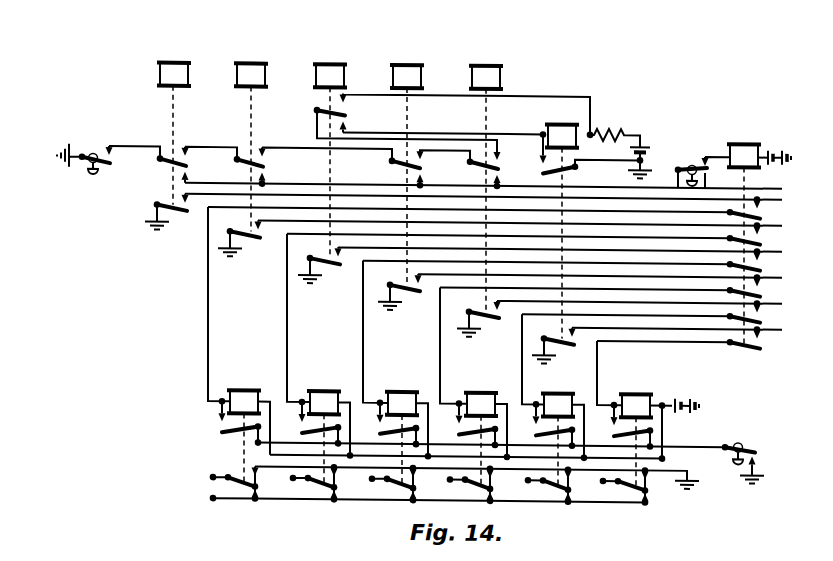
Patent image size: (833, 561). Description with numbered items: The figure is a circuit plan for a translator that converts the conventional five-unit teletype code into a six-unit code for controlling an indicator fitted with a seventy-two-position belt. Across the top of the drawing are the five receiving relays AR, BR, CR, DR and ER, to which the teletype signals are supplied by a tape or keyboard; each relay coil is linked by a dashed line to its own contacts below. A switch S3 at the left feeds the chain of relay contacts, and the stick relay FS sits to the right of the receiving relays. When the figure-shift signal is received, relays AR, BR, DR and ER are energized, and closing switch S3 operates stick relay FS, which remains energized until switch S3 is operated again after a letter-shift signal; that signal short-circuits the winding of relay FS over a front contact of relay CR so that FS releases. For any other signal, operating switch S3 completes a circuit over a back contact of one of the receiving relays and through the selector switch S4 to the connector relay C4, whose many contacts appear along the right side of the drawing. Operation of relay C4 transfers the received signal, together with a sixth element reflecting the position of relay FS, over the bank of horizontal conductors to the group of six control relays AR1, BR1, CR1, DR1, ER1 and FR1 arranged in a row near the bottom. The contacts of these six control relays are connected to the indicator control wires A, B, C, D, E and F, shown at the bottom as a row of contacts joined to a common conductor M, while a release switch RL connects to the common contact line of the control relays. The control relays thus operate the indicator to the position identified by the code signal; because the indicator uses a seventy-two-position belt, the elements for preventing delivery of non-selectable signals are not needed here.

The receiving relay AR is at (174, 122).
The receiving relay BR is at (251, 135).
The receiving relay CR is at (330, 149).
The receiving relay DR is at (408, 163).
The receiving relay ER is at (486, 177).
The stick relay FS is at (560, 218).
The switch S3 is at (85, 145).
The selector switch S4 is at (701, 160).
The connector relay C4 is at (759, 232).
The control relay AR1 is at (244, 426).
The control relay BR1 is at (326, 427).
The control relay CR1 is at (404, 428).
The control relay DR1 is at (483, 429).
The control relay ER1 is at (560, 429).
The control relay FR1 is at (655, 430).
The release switch RL is at (741, 448).
The indicator control wire A is at (221, 478).
The indicator control wire B is at (303, 480).
The indicator control wire C is at (383, 481).
The indicator control wire D is at (459, 481).
The indicator control wire E is at (538, 482).
The indicator control wire F is at (615, 483).
The common contact M is at (416, 500).